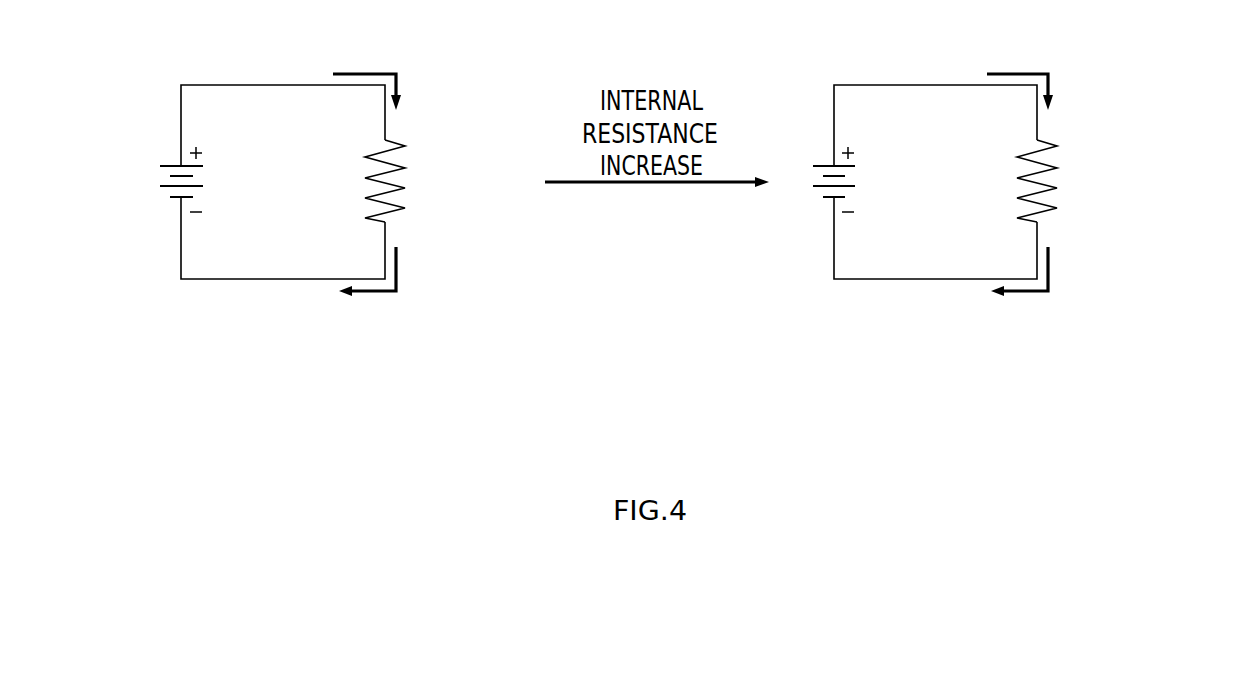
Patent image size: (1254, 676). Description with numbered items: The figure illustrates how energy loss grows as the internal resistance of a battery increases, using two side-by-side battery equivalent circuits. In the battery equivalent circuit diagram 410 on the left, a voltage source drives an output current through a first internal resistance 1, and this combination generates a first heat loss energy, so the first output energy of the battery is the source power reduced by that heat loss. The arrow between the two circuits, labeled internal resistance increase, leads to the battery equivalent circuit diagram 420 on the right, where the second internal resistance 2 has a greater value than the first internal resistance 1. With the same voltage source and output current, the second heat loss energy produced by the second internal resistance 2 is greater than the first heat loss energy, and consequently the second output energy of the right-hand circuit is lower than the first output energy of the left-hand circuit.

The battery equivalent circuit diagram 410 is at (342, 220).
The battery equivalent circuit diagram 420 is at (994, 220).
The internal resistance R1 1 is at (370, 181).
The internal resistance R2 2 is at (1022, 181).